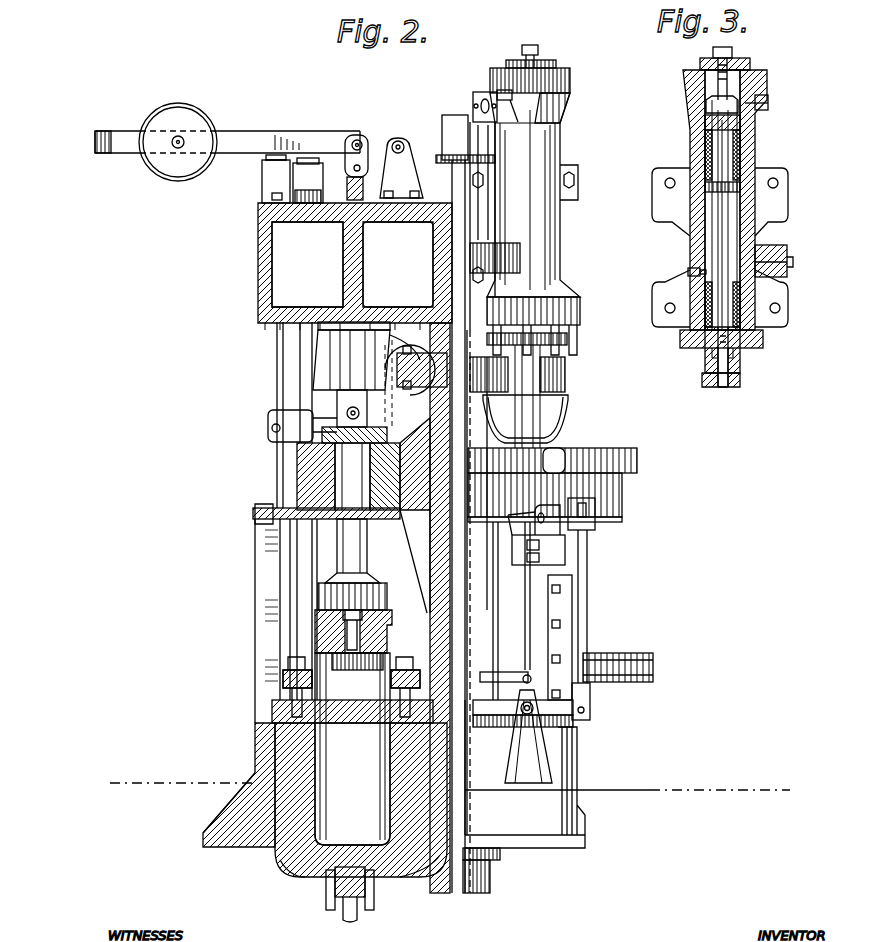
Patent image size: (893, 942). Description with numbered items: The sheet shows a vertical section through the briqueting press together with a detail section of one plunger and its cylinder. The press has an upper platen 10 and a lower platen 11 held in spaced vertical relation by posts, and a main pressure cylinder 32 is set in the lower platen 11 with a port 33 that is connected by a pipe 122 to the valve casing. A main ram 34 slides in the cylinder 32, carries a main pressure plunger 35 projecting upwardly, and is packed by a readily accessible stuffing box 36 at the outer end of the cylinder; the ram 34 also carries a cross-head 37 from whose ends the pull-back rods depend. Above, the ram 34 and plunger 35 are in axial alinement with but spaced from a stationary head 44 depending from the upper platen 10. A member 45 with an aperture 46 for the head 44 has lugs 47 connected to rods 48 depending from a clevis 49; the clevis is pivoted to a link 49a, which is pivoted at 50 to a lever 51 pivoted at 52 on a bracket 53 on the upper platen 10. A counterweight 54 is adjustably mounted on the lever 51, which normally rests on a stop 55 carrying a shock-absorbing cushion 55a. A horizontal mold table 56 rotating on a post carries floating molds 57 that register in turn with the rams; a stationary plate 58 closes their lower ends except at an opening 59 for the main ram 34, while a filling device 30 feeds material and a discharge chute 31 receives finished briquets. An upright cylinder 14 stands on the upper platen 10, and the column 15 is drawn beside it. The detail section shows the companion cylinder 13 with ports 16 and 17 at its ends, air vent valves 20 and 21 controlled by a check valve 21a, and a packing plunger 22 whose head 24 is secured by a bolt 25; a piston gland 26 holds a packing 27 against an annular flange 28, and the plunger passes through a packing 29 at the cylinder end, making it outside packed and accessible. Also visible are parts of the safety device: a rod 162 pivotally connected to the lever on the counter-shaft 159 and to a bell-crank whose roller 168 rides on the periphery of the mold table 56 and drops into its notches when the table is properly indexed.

In FIG. 2, the upper platen 10 is at (258, 252).
In FIG. 2, the lower platen 11 is at (256, 742).
In FIG. 3, the upright cylinder 13 is at (755, 151).
In FIG. 2, the upright cylinder 14 is at (560, 156).
In FIG. 2, the column 15 is at (462, 504).
In FIG. 3, the port 16 is at (769, 107).
In FIG. 3, the port 17 is at (793, 263).
In FIG. 3, the air vent valve 20 is at (688, 272).
In FIG. 3, the air vent valve 21 is at (703, 66).
In FIG. 3, the check valve 21a is at (732, 58).
In FIG. 3, the packing plunger 22 is at (739, 366).
In FIG. 3, the head 24 is at (740, 384).
In FIG. 3, the bolt 25 is at (723, 387).
In FIG. 3, the piston gland 26 is at (705, 123).
In FIG. 3, the packing 27 is at (705, 150).
In FIG. 3, the annular flange 28 is at (742, 187).
In FIG. 3, the packing 29 is at (742, 300).
In FIG. 2, the filling device 30 is at (568, 408).
In FIG. 2, the discharge chute 31 is at (595, 592).
In FIG. 2, the main pressure cylinder 32 is at (300, 858).
In FIG. 2, the port 33 is at (355, 862).
In FIG. 2, the main ram 34 is at (352, 749).
In FIG. 2, the main pressure plunger 35 is at (352, 552).
In FIG. 2, the stuffing box 36 is at (297, 703).
In FIG. 2, the cross-head 37 is at (384, 632).
In FIG. 2, the stationary head 44 is at (372, 425).
In FIG. 2, the member 45 is at (318, 442).
In FIG. 2, the aperture 46 is at (300, 430).
In FIG. 2, the lugs 47 is at (320, 400).
In FIG. 2, the rods 48 is at (362, 263).
In FIG. 2, the clevis 49 is at (348, 186).
In FIG. 2, the link 49a is at (352, 152).
In FIG. 2, the pivot 50 is at (360, 142).
In FIG. 2, the lever 51 is at (296, 142).
In FIG. 2, the pivot 52 is at (402, 146).
In FIG. 2, the bracket 53 is at (412, 168).
In FIG. 2, the counterweight 54 is at (200, 127).
In FIG. 2, the stop 55 is at (264, 188).
In FIG. 2, the shock-absorbing cushion 55a is at (268, 172).
In FIG. 2, the mold table 56 is at (637, 466).
In FIG. 2, the molds 57 is at (352, 490).
In FIG. 2, the stationary plate 58 is at (610, 512).
In FIG. 2, the opening 59 is at (378, 513).
In FIG. 2, the pipe 122 is at (357, 916).
In FIG. 2, the counter-shaft 159 is at (527, 712).
In FIG. 2, the rod 162 is at (582, 588).
In FIG. 2, the roller 168 is at (560, 452).